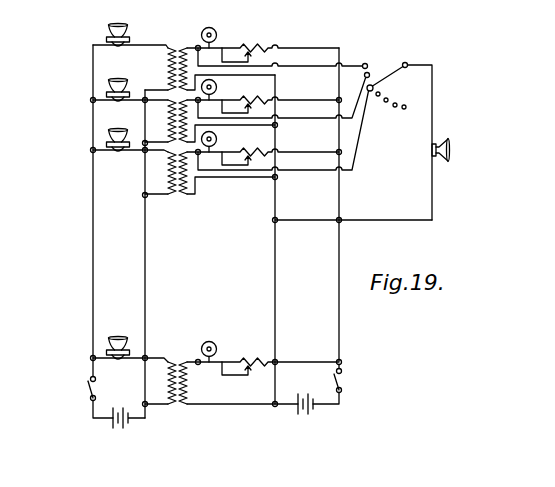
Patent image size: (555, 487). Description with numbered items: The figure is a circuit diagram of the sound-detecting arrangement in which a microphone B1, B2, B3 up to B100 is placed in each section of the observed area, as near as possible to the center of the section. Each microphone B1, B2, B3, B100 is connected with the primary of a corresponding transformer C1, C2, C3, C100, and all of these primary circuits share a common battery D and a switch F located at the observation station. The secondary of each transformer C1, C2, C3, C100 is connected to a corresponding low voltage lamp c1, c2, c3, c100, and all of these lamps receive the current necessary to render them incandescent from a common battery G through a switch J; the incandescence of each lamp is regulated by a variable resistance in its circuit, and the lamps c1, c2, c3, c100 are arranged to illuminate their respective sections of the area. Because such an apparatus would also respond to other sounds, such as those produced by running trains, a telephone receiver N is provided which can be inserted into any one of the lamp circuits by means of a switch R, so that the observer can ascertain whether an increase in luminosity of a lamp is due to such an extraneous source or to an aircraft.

The microphone B1 is at (127, 13).
The microphone B2 is at (109, 84).
The microphone B3 is at (109, 134).
The microphone B100 is at (106, 344).
The transformer C1 is at (179, 47).
The transformer C2 is at (176, 108).
The transformer C3 is at (170, 162).
The transformer C100 is at (174, 362).
The low voltage lamp c1 is at (215, 29).
The low voltage lamp c2 is at (216, 85).
The low voltage lamp c3 is at (216, 137).
The low voltage lamp c100 is at (215, 342).
The switch R is at (392, 68).
The telephone receiver N is at (449, 147).
The switch F is at (100, 398).
The common battery D is at (131, 420).
The common battery G is at (304, 393).
The switch J is at (339, 378).